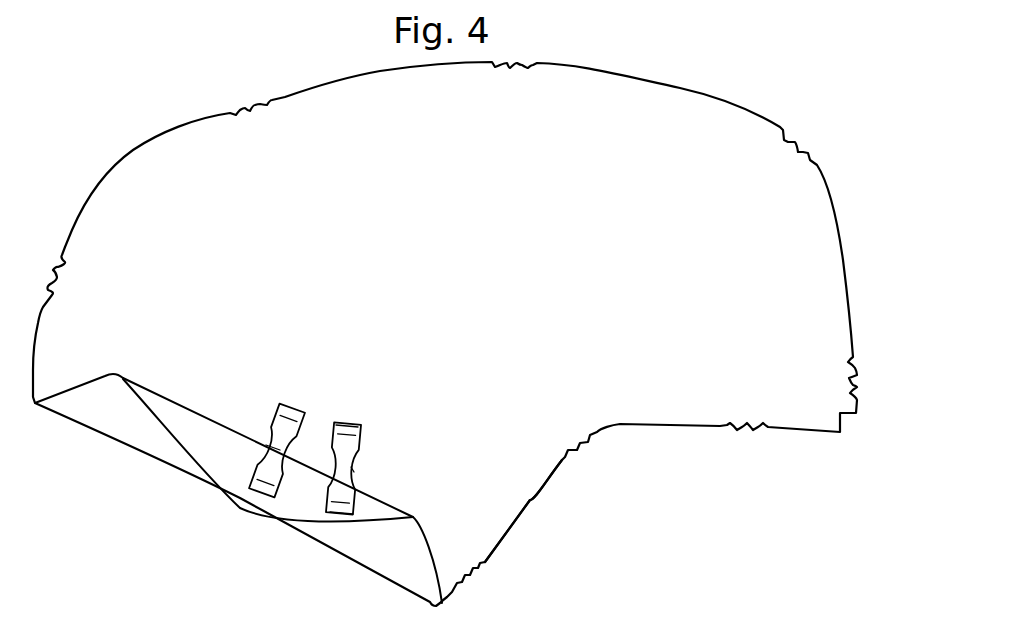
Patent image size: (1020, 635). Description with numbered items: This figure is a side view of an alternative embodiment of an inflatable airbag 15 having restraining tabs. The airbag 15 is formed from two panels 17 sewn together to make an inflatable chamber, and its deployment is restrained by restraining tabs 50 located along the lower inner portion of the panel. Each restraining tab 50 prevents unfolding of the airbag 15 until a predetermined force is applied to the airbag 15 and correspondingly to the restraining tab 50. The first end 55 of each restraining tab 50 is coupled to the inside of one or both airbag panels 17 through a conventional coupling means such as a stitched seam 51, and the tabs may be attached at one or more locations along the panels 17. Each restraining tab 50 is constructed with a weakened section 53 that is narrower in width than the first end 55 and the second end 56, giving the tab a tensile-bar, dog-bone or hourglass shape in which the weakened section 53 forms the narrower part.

The inflatable airbag 15 is at (833, 185).
The airbag panel 17 is at (552, 523).
The restraining tab 50 is at (263, 468).
The stitched seam 51 is at (350, 427).
The weakened section 53 is at (262, 447).
The first end 55 is at (345, 423).
The second end 56 is at (353, 508).